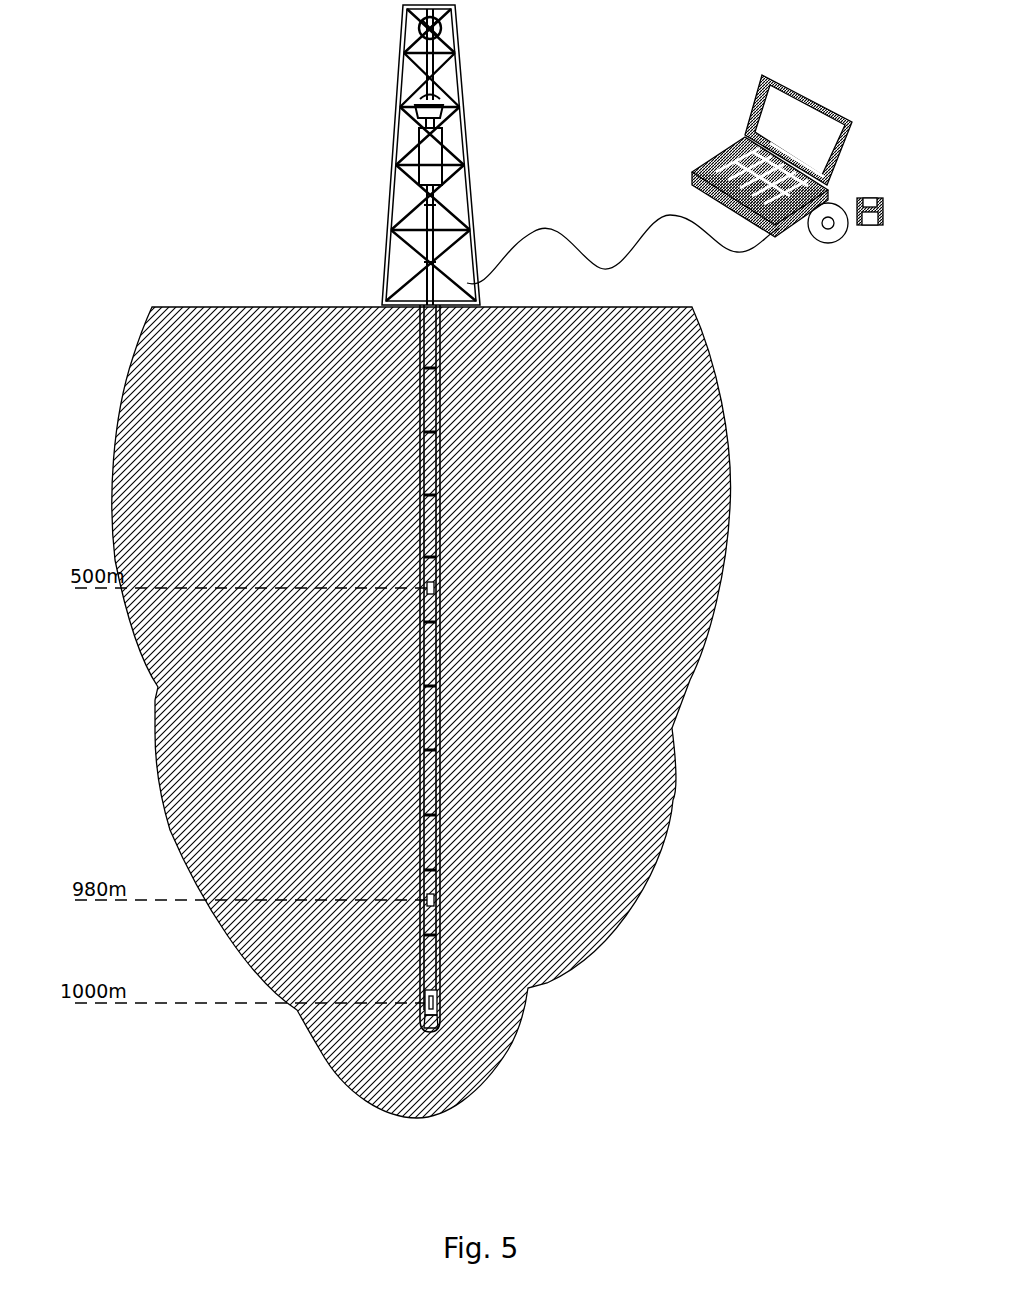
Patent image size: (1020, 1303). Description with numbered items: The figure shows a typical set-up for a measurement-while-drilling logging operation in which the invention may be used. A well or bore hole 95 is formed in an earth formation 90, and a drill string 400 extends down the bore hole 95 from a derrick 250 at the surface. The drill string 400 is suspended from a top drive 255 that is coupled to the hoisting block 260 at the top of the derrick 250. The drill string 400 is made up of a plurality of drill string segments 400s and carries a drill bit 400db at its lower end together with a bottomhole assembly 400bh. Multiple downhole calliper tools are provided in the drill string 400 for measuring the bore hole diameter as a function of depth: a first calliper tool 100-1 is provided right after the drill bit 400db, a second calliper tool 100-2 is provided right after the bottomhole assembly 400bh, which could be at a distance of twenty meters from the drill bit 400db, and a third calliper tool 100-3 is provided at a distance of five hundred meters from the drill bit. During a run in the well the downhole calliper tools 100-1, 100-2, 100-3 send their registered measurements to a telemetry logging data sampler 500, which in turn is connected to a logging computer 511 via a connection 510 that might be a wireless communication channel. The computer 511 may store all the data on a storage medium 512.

The earth formation 90 is at (735, 310).
The bore hole 95 is at (430, 432).
The derrick 250 is at (474, 203).
The top drive 255 is at (452, 160).
The hoisting block 260 is at (462, 78).
The drill string 400 is at (430, 355).
The drill string segments 400s is at (437, 393).
The bottomhole assembly 400bh is at (446, 966).
The drill bit 400db is at (448, 1026).
The first calliper tool 100-1 is at (447, 1007).
The second calliper tool 100-2 is at (443, 904).
The third calliper tool 100-3 is at (437, 578).
The telemetry logging data sampler 500 is at (430, 262).
The connection 510 is at (645, 229).
The logging computer 511 is at (695, 159).
The storage medium 512 is at (875, 240).